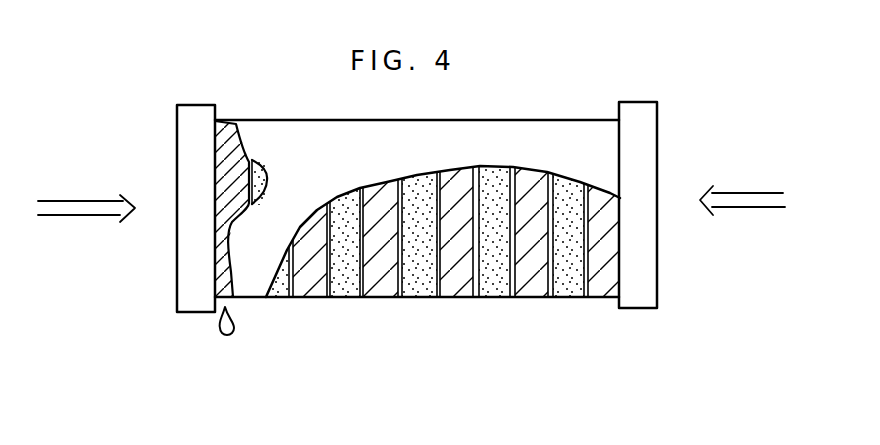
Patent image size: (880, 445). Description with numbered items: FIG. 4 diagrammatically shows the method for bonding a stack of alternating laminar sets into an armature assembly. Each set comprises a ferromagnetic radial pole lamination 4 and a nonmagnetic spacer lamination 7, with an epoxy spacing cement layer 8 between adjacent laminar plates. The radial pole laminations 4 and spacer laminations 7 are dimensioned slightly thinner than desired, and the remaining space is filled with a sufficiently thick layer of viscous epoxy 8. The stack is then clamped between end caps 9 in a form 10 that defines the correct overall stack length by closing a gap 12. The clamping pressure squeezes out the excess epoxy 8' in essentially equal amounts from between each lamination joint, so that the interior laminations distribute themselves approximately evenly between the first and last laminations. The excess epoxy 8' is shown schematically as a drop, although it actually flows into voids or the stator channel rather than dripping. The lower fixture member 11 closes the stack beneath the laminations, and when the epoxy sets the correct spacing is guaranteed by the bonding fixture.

The radial pole lamination 4 is at (540, 297).
The spacer lamination 7 is at (355, 297).
The epoxy spacing cement layer 8 is at (497, 253).
The excess epoxy 8' is at (204, 332).
The end cap 9 is at (193, 113).
The form 10 is at (358, 131).
The lower base sheet 11 is at (257, 313).
The gap 12 is at (220, 258).